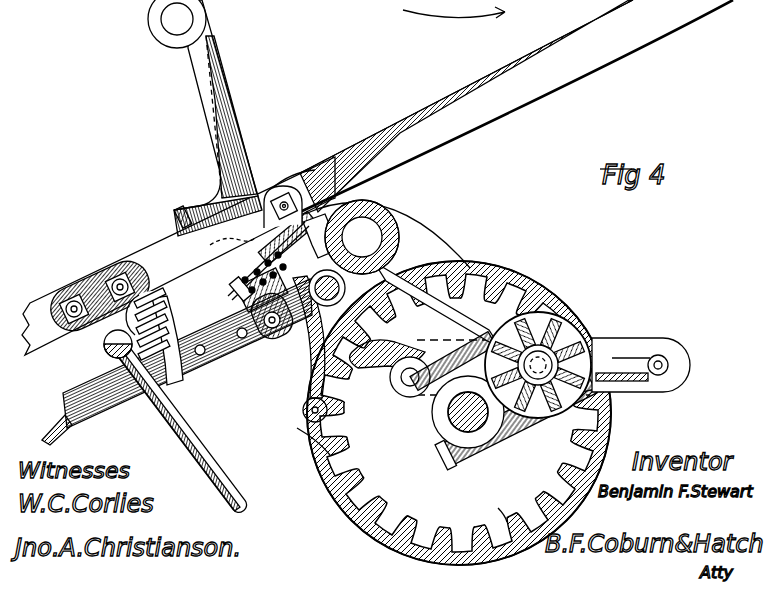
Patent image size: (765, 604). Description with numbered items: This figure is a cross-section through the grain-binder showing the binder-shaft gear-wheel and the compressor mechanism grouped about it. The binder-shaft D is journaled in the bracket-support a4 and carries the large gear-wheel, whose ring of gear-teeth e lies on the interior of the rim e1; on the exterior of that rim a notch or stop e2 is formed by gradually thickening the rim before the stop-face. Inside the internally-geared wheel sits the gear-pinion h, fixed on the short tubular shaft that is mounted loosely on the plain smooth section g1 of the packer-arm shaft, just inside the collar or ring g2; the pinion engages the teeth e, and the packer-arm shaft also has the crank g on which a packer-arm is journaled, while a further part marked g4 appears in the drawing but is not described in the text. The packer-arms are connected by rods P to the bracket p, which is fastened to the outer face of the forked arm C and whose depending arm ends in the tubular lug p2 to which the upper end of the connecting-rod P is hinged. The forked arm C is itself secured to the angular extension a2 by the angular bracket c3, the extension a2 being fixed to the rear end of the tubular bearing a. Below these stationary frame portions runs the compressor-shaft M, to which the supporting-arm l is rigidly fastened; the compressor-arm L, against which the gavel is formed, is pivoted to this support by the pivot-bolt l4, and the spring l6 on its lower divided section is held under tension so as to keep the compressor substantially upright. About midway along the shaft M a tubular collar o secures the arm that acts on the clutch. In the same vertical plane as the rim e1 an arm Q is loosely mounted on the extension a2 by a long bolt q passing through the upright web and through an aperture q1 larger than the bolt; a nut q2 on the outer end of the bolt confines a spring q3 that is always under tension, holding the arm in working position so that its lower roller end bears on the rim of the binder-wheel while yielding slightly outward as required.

The compressor-arm L is at (254, 42).
The supporting-arm l is at (78, 392).
The pivot-bolt l4 is at (264, 335).
The spring l6 is at (168, 228).
The bracket p is at (94, 288).
The tubular lug p2 is at (106, 345).
The connecting-rod P is at (50, 426).
The bolt q is at (230, 297).
The aperture q1 is at (252, 242).
The nut q2 is at (241, 340).
The spring q3 is at (249, 276).
The arm Q is at (312, 362).
The pivot hub g4 is at (304, 410).
The notch or stop e2 is at (306, 433).
The angular bracket c3 is at (281, 190).
The angular extension a2 is at (310, 200).
The tubular bearing a is at (383, 212).
The bracket-support a4 is at (505, 428).
The compressor-shaft M is at (520, 248).
The forked arm C is at (516, 106).
The tubular collar o is at (416, 356).
The plain smooth section g1 is at (405, 388).
The binder-shaft D is at (445, 432).
The ring of gear-teeth e is at (426, 522).
The rim e1 is at (493, 503).
The collar or ring g2 is at (548, 345).
The gear-pinion h is at (556, 350).
The crank g is at (652, 345).